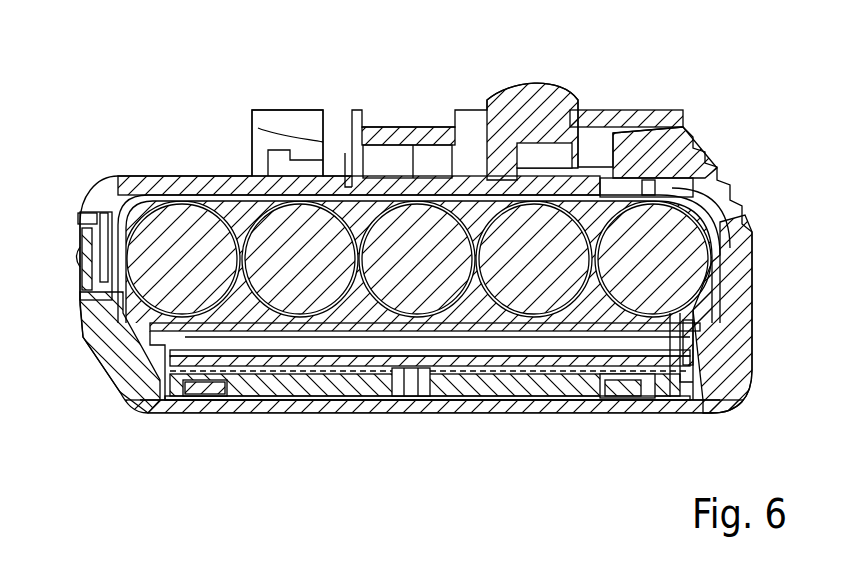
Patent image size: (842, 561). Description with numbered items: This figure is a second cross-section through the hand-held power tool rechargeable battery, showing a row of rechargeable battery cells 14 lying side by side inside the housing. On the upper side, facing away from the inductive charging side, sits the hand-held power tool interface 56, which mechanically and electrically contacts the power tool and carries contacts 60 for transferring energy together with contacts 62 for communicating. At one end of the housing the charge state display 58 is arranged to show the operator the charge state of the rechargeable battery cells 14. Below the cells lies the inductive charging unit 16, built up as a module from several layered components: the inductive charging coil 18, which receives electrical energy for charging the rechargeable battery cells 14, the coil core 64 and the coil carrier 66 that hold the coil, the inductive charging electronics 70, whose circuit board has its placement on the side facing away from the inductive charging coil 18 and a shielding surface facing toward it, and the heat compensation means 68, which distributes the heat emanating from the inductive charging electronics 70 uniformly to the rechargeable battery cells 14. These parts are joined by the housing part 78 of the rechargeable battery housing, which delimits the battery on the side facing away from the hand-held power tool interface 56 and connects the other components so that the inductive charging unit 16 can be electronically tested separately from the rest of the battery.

The rechargeable battery cells 14 is at (178, 237).
The inductive charging unit 16 is at (100, 407).
The inductive charging coil 18 is at (634, 398).
The hand-held power tool interface 56 is at (275, 91).
The charge state display 58 is at (68, 268).
The contacts for transferring energy 60 is at (395, 163).
The contacts for communicating 62 is at (318, 162).
The coil core 64 is at (260, 413).
The coil carrier 66 is at (608, 396).
The heat compensation means 68 is at (363, 385).
The inductive charging electronics 70 is at (497, 400).
The housing part 78 is at (732, 367).